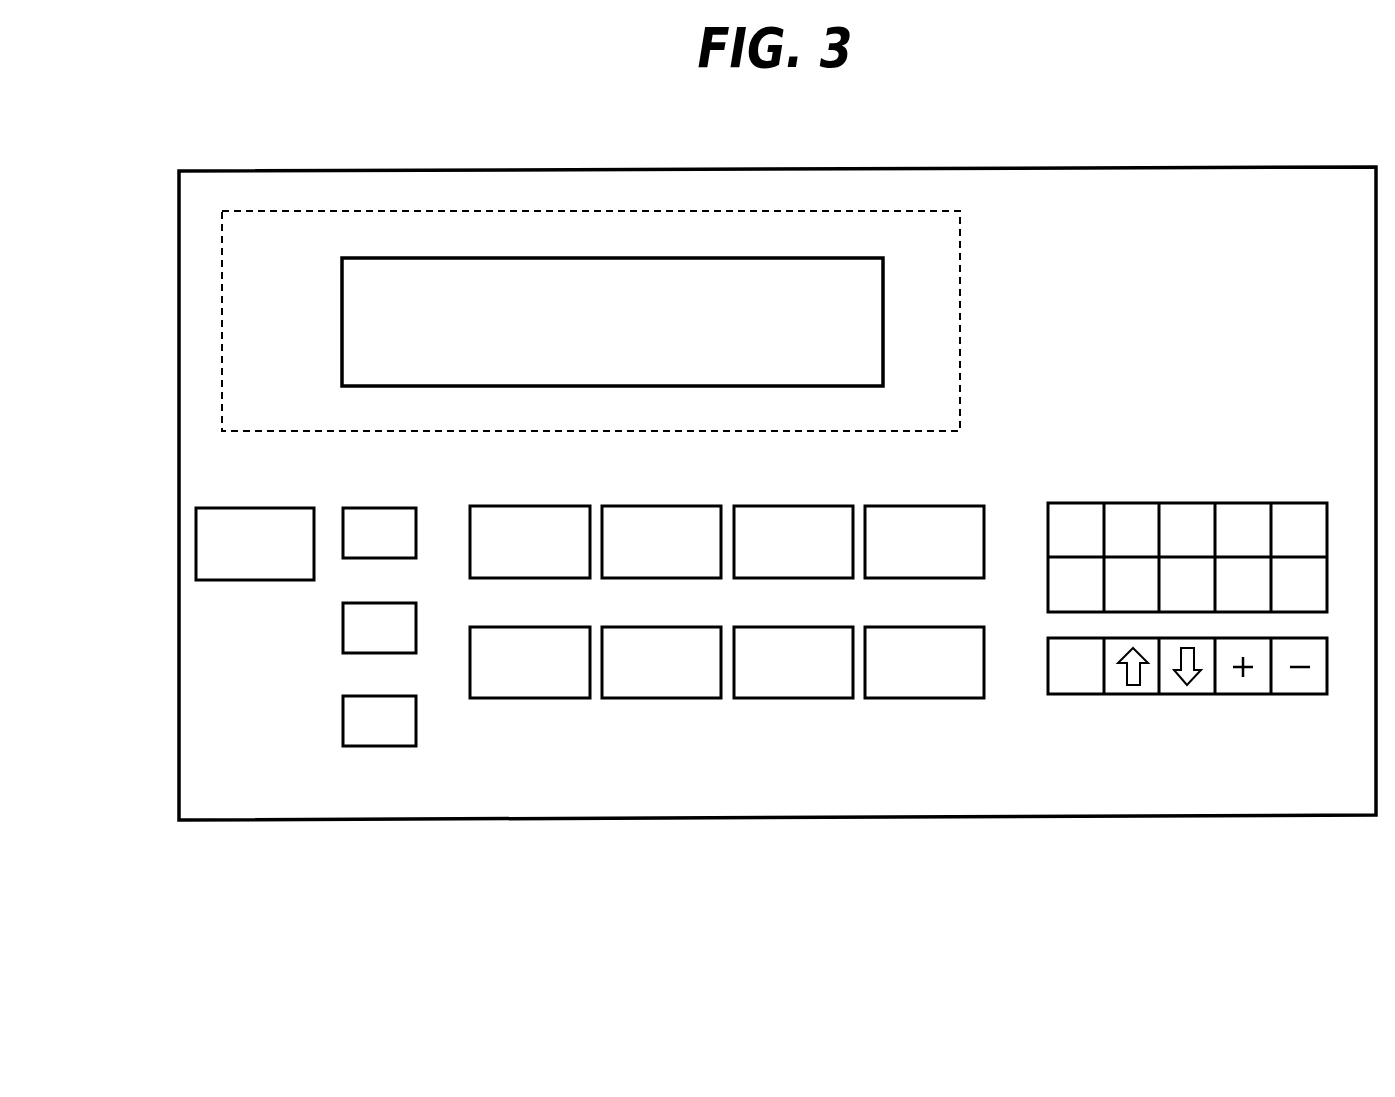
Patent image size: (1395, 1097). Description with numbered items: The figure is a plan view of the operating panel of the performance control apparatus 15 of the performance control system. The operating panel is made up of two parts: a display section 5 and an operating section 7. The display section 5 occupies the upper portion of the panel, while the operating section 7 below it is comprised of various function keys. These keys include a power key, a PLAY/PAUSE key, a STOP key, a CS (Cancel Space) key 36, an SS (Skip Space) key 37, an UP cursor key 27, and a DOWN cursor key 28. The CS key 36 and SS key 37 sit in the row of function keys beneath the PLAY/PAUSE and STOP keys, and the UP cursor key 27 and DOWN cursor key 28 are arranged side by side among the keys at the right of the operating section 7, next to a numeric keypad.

The performance control apparatus 15 is at (1057, 167).
The display section 5 is at (880, 305).
The operating section 7 is at (163, 507).
The CS (Cancel Space) key 36 is at (527, 699).
The SS (Skip Space) key 37 is at (665, 699).
The UP cursor key 27 is at (1130, 694).
The DOWN cursor key 28 is at (1190, 694).